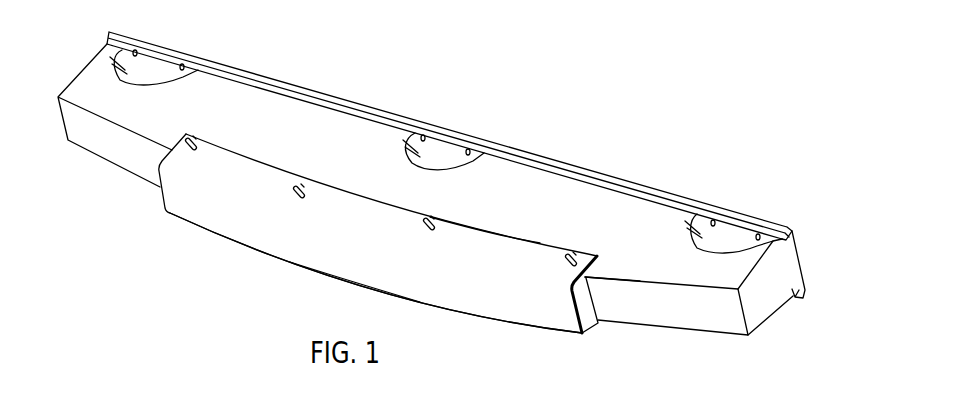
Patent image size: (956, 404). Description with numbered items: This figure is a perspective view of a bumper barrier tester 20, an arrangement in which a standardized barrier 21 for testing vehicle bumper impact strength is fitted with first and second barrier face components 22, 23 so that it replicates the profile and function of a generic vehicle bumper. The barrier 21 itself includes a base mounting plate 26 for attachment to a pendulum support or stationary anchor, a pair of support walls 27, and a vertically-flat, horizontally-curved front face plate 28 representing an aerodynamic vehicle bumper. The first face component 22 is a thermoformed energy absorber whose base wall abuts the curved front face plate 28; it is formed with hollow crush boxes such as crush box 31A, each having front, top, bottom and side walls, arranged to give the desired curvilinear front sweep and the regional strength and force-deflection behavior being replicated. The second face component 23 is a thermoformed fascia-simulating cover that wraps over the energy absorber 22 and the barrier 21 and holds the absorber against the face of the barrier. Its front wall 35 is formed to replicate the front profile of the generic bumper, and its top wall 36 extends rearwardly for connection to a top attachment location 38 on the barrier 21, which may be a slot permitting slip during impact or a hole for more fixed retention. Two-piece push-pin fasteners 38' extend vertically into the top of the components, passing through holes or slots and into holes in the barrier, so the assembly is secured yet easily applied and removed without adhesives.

The bumper barrier tester 20 is at (318, 279).
The barrier 21 is at (773, 325).
The first face component 22 is at (595, 312).
The second face component 23 is at (517, 323).
The base mounting plate 26 is at (687, 197).
The support walls 27 is at (595, 202).
The front face plate 28 is at (692, 317).
The crush box 31A is at (590, 290).
The front wall 35 is at (447, 293).
The top wall 36 is at (472, 245).
The top attachment location 38 is at (367, 180).
The two-piece push-pin fastener 38' is at (404, 178).